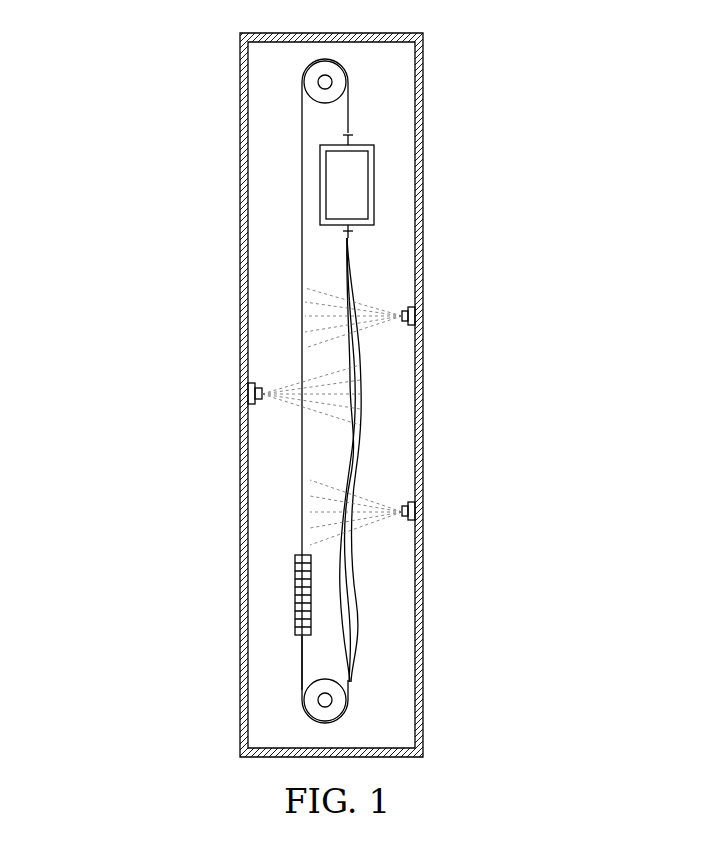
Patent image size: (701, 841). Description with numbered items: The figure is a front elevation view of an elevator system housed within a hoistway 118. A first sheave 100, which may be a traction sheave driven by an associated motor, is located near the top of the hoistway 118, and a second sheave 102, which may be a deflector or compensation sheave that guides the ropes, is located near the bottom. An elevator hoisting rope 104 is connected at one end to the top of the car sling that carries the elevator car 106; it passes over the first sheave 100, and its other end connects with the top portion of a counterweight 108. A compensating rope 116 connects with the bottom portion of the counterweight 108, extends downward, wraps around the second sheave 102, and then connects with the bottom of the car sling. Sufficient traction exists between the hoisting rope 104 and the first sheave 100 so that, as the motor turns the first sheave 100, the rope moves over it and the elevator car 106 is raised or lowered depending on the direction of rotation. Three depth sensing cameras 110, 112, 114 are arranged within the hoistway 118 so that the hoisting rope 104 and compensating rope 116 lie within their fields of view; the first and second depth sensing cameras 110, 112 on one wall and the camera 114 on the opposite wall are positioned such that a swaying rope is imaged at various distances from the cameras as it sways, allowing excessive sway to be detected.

The first sheave 100 is at (352, 80).
The second sheave 102 is at (357, 695).
The elevator hoisting rope 104 is at (290, 307).
The elevator car 106 is at (383, 187).
The counterweight 108 is at (287, 597).
The depth sensing camera 110 is at (424, 313).
The depth sensing camera 112 is at (424, 508).
The depth sensing camera 114 is at (237, 392).
The compensating rope 116 is at (296, 653).
The hoistway 118 is at (238, 126).